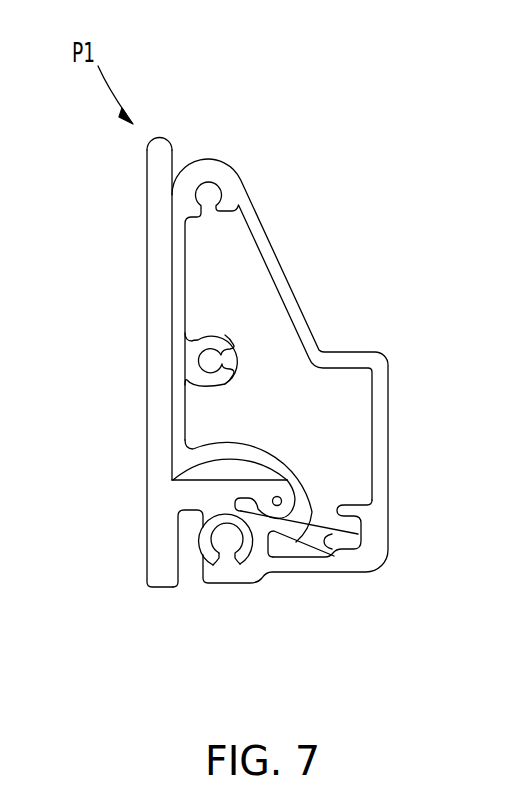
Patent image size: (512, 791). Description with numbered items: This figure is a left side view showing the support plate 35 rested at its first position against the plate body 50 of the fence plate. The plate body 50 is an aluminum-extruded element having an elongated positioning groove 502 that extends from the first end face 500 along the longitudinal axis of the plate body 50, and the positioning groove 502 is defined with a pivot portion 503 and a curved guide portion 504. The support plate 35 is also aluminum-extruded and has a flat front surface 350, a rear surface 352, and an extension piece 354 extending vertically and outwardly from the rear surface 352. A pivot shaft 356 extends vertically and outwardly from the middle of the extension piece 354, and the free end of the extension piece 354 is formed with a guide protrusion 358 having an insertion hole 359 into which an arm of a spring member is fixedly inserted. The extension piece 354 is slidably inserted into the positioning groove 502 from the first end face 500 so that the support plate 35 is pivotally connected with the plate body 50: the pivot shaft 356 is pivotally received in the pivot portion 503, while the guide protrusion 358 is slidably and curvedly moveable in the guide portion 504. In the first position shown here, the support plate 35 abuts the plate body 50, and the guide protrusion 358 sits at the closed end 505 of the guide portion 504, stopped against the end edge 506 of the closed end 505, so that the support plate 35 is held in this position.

The support plate 35 is at (163, 235).
The flat front surface 350 is at (148, 178).
The rear surface 352 is at (173, 148).
The extension piece 354 is at (210, 495).
The pivot shaft 356 is at (202, 538).
The guide protrusion 358 is at (289, 502).
The insertion hole 359 is at (283, 498).
The plate body 50 is at (262, 220).
The first end face 500 is at (275, 268).
The positioning groove 502 is at (207, 586).
The pivot portion 503 is at (226, 558).
The curved guide portion 504 is at (232, 467).
The closed end 505 is at (300, 527).
The end edge 506 is at (334, 556).